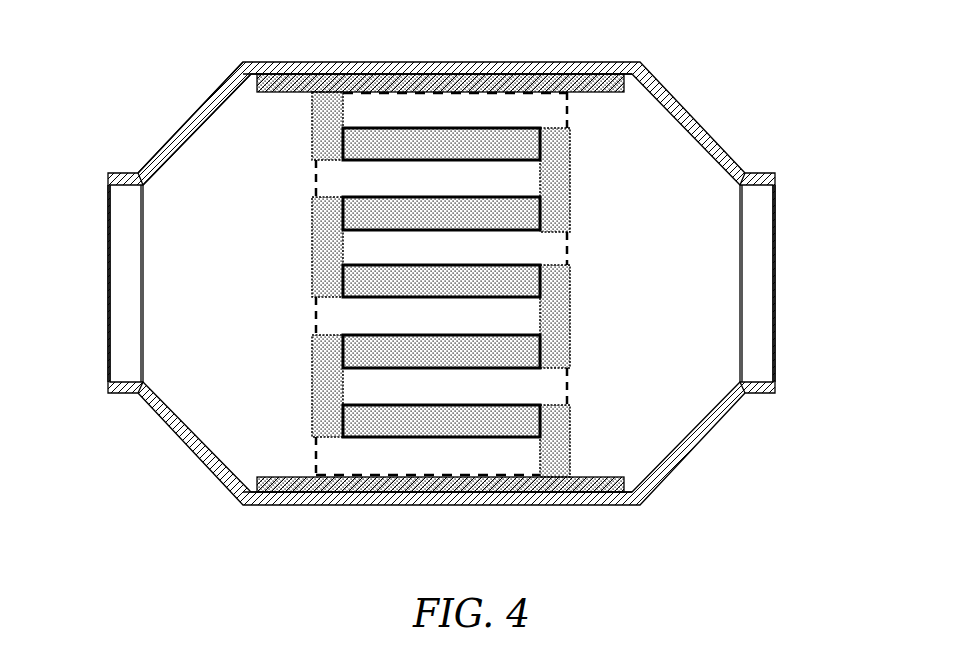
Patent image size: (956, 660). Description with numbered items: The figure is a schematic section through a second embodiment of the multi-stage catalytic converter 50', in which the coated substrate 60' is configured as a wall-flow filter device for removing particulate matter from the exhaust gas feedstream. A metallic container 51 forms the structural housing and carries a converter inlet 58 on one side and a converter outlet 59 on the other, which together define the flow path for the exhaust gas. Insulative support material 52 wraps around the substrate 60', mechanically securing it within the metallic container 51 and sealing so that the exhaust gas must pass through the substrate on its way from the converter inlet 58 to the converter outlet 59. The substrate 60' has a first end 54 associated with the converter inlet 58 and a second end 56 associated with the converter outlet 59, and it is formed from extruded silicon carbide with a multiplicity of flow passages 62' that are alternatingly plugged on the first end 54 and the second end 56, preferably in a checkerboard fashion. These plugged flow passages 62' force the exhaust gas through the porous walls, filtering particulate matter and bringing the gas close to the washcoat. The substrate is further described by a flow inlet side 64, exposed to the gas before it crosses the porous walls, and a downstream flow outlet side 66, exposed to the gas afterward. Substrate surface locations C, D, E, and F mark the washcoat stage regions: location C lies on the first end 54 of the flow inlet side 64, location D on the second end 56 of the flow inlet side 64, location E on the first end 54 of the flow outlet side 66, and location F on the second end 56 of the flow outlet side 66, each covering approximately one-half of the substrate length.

The multi-stage catalytic converter 50' is at (441, 264).
The metallic container 51 is at (166, 140).
The insulative support material 52 is at (565, 80).
The first end 54 is at (310, 278).
The second end 56 is at (574, 308).
The converter inlet 58 is at (120, 260).
The converter outlet 59 is at (760, 260).
The substrate 60' is at (497, 248).
The flow passages 62' is at (441, 421).
The flow inlet side 64 is at (310, 403).
The flow outlet side 66 is at (572, 357).
The substrate surface location C is at (312, 150).
The substrate surface location D is at (508, 163).
The substrate surface location E is at (345, 110).
The substrate surface location F is at (573, 207).